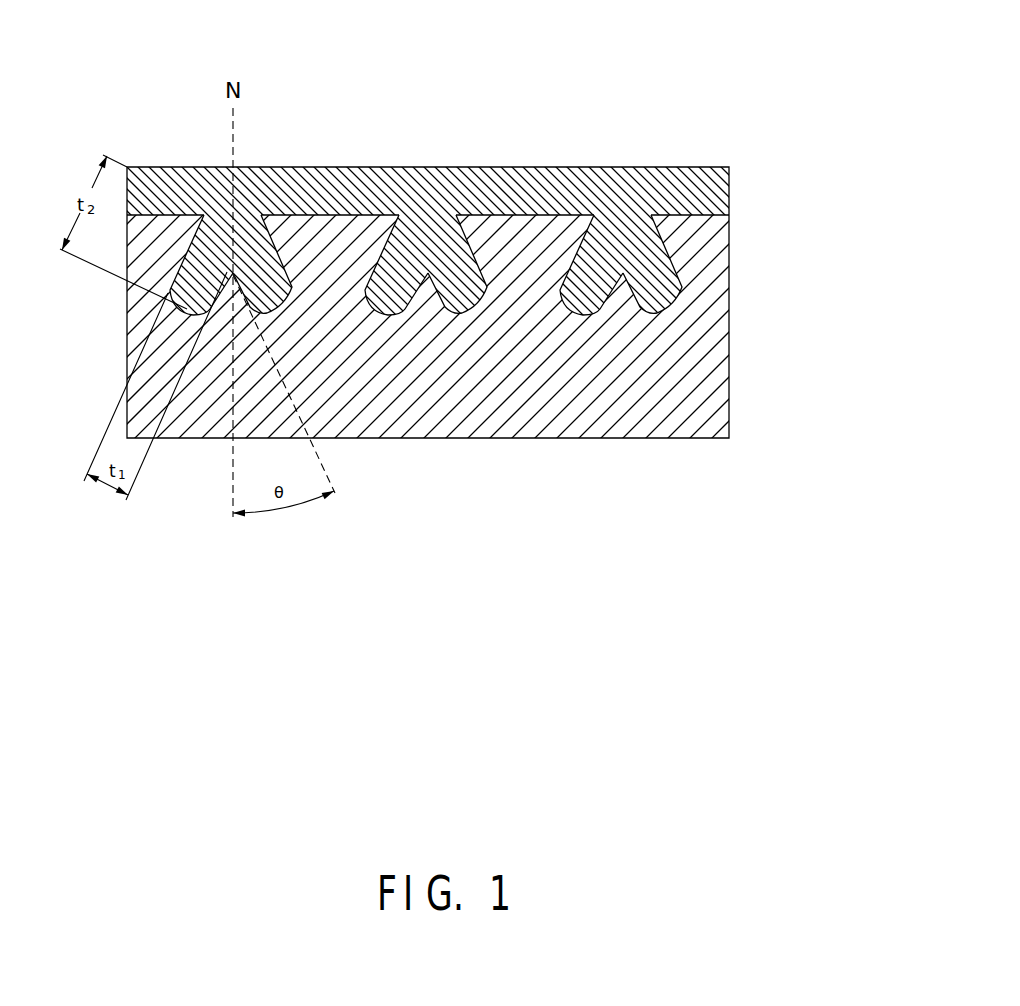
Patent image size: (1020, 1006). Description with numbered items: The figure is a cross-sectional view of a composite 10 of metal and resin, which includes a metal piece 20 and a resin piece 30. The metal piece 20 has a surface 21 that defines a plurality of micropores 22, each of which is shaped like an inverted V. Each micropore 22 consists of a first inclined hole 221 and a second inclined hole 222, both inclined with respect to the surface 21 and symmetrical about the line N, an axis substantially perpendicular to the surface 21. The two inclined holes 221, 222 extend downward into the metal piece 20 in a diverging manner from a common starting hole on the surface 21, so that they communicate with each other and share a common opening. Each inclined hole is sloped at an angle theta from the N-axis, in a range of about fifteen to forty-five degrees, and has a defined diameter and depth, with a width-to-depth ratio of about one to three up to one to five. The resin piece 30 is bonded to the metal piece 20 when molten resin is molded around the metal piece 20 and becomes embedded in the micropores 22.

The composite 10 is at (472, 277).
The metal piece 20 is at (715, 337).
The surface 21 is at (693, 208).
The micropores 22 is at (442, 336).
The first inclined hole 221 is at (176, 274).
The second inclined hole 222 is at (256, 313).
The resin piece 30 is at (677, 190).